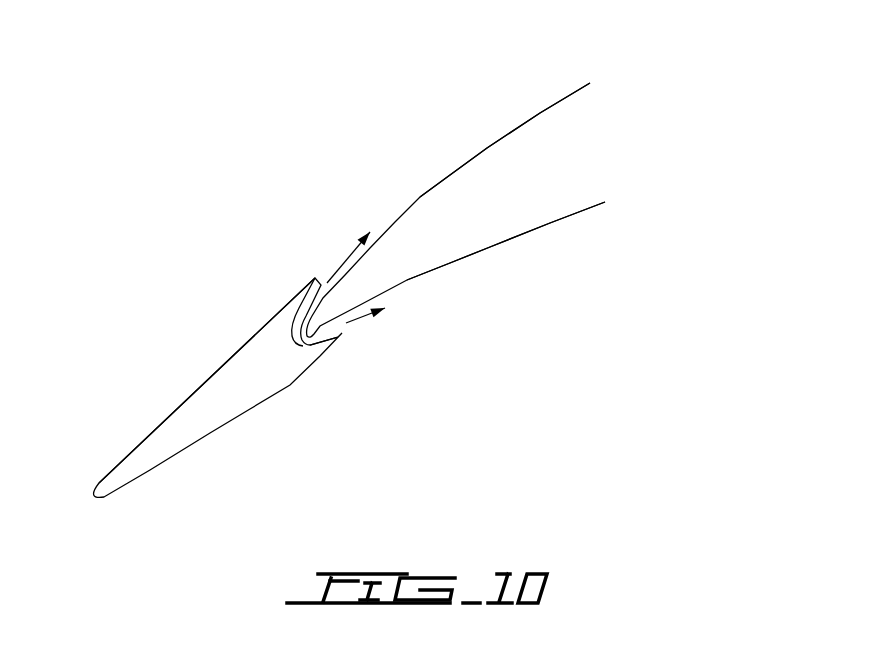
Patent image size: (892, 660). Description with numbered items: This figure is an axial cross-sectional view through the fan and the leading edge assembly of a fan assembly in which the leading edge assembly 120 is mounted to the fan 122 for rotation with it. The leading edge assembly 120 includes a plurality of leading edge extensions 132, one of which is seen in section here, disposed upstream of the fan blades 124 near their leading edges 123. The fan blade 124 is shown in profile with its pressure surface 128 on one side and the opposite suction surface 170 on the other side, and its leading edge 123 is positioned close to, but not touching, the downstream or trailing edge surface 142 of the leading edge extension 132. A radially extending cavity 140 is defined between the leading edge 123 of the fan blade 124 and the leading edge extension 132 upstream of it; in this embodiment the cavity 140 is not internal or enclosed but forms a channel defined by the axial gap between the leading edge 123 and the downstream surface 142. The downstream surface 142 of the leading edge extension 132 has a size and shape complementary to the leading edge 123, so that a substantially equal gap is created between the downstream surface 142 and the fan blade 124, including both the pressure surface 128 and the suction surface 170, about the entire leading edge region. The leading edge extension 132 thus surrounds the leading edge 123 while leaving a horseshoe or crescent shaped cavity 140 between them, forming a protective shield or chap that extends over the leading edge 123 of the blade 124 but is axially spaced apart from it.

The leading edge assembly 120 is at (134, 496).
The fan 122 is at (596, 236).
The leading edges 123 is at (317, 287).
The fan blades 124 is at (582, 178).
The pressure surface 128 is at (490, 247).
The leading edge extensions 132 is at (174, 412).
The cavity 140 is at (304, 358).
The downstream surface 142 is at (290, 341).
The suction surface 170 is at (487, 148).